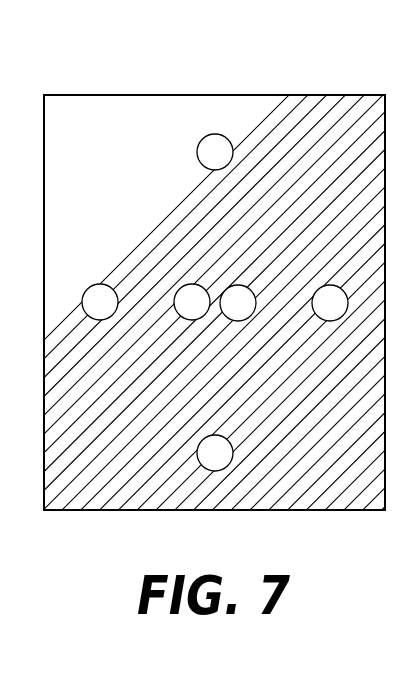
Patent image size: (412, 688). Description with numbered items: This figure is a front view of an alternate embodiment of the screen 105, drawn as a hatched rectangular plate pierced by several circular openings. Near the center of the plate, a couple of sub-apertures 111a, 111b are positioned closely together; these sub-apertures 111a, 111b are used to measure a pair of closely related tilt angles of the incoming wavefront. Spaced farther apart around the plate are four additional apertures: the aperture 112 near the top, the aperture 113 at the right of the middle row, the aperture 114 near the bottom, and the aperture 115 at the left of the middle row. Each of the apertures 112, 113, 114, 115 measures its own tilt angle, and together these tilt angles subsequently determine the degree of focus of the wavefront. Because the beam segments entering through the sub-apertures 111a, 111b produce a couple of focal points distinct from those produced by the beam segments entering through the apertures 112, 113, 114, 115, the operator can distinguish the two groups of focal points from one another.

The screen 105 is at (162, 110).
The aperture 112 is at (221, 150).
The aperture 115 is at (102, 290).
The sub-aperture 111a is at (191, 290).
The sub-aperture 111b is at (237, 290).
The aperture 113 is at (327, 290).
The aperture 114 is at (220, 452).